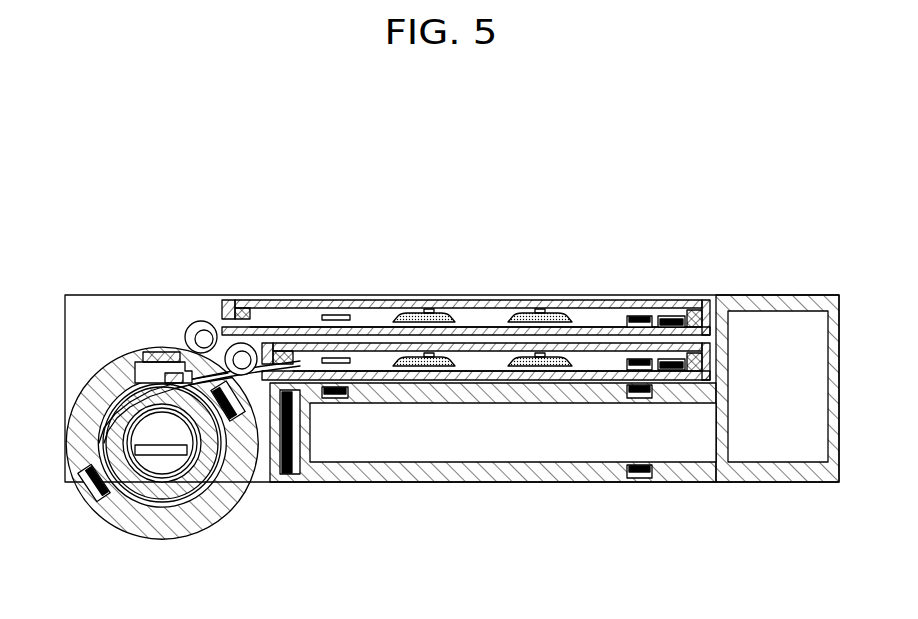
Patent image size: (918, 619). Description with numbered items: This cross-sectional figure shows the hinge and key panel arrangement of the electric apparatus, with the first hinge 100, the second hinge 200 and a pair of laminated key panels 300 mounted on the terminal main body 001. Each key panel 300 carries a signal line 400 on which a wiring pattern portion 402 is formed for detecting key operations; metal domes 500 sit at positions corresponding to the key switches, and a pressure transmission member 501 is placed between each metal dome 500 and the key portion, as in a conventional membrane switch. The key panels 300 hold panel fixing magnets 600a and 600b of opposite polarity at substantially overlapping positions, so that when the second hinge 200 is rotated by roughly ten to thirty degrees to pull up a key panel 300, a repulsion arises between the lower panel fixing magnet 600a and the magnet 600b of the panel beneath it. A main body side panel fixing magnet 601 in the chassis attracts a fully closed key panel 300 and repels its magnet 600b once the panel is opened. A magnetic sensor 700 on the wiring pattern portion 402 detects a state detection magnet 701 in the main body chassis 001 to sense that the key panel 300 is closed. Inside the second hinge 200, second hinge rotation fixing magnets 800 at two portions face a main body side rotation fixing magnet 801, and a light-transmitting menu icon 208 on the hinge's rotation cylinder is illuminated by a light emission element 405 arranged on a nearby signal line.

The terminal main body 001 is at (803, 289).
The first hinge 100 is at (244, 344).
The second hinge 200 is at (94, 385).
The menu icon 208 is at (152, 352).
The key panel 300 is at (607, 343).
The signal line 400 is at (165, 457).
The wiring pattern portion 402 is at (476, 370).
The light emission element 405 is at (166, 362).
The metal dome 500 is at (541, 309).
The pressure transmission member 501 is at (443, 357).
The panel fixing magnet 600a is at (645, 359).
The panel fixing magnet 600b is at (672, 316).
The main body side panel fixing magnet 601 is at (641, 399).
The magnetic sensor 700 is at (340, 358).
The state detection magnet 701 is at (321, 387).
The second hinge rotation fixing magnet 800 is at (91, 497).
The main body side rotation fixing magnet 801 is at (294, 475).